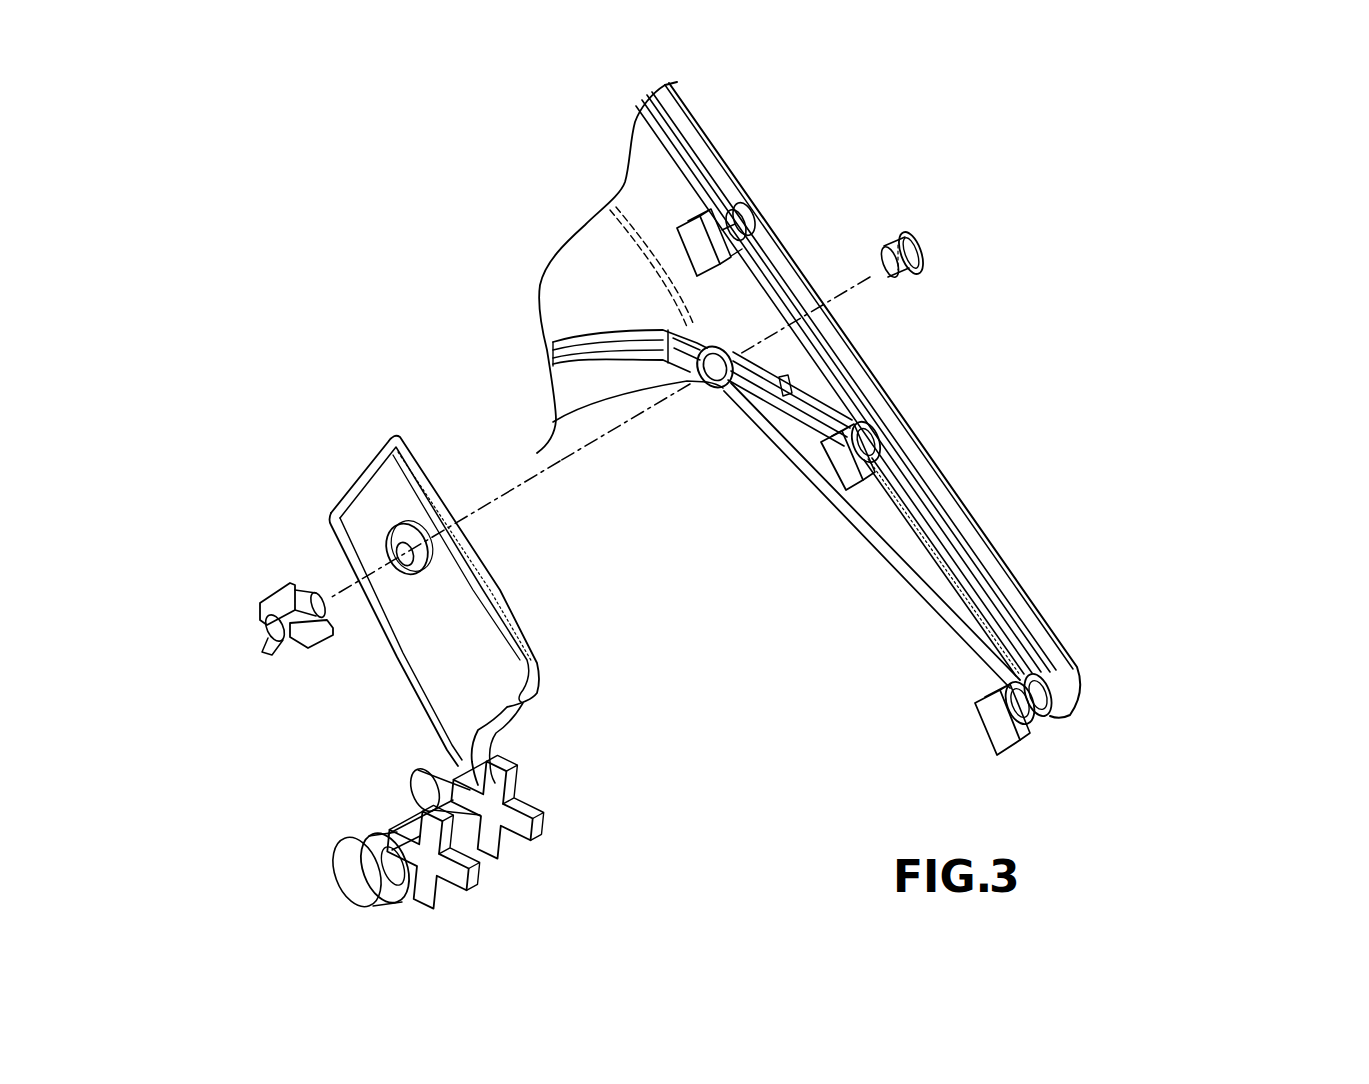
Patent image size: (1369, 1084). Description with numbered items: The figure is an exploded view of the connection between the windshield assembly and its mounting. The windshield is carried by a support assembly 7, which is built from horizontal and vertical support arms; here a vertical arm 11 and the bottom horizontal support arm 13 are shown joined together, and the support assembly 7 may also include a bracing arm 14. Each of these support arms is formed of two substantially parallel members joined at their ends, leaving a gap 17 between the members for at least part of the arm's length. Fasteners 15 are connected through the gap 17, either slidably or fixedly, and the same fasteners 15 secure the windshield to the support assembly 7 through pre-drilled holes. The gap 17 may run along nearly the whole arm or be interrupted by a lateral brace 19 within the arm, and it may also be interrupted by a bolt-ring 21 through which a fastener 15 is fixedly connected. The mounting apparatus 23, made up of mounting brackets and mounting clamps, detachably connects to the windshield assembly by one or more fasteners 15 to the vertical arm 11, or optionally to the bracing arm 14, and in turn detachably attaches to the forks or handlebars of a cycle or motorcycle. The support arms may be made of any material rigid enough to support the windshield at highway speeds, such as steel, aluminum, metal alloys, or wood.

The support assembly 7 is at (762, 273).
The vertical arm 11 is at (912, 497).
The bottom horizontal support arm 13 is at (548, 338).
The bracing arm 14 is at (860, 520).
The fastener 15 is at (920, 240).
The gap 17 is at (567, 350).
The lateral brace 19 is at (668, 357).
The bolt-ring 21 is at (1040, 687).
The mounting apparatus 23 is at (443, 680).